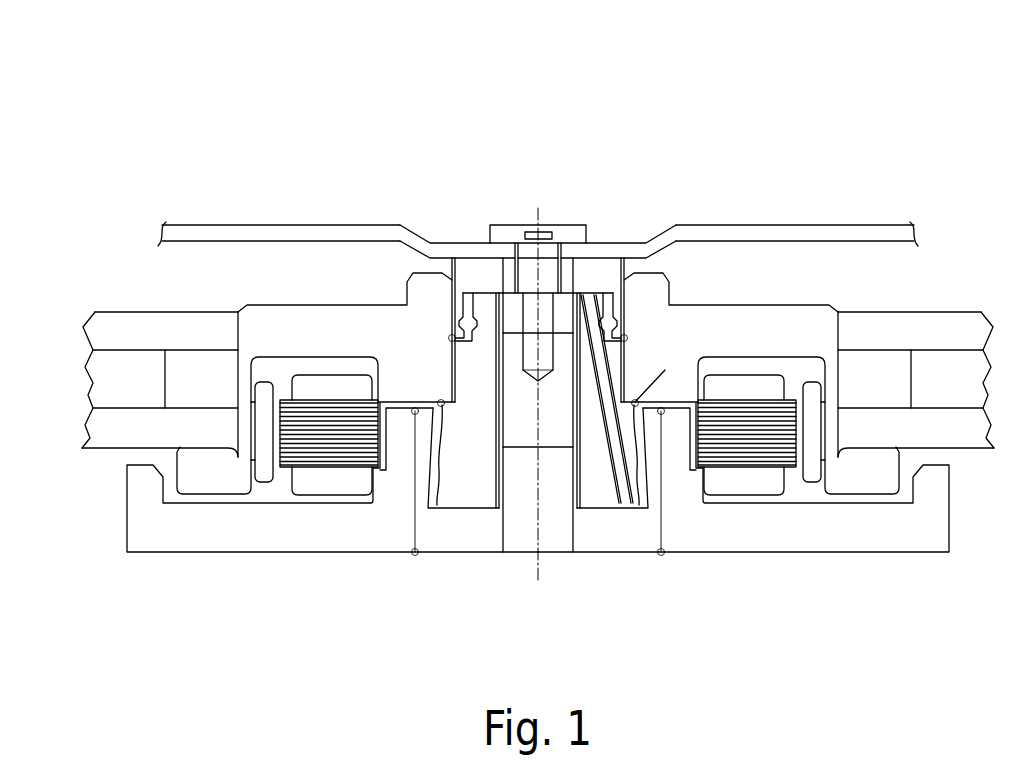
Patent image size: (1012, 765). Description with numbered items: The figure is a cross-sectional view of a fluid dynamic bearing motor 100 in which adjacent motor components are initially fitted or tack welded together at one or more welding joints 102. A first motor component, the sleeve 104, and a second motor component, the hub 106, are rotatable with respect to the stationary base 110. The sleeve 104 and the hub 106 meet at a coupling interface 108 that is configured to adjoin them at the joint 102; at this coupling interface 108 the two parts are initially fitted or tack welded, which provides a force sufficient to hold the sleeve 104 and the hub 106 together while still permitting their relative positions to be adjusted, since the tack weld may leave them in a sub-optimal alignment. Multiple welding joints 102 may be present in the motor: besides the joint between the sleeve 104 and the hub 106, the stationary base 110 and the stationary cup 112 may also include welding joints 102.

The fluid dynamic bearing motor 100 is at (176, 150).
The welding joint 102 is at (627, 340).
The sleeve 104 is at (478, 470).
The hub 106 is at (305, 340).
The coupling interface 108 is at (450, 376).
The base 110 is at (305, 532).
The stationary cup 112 is at (468, 523).